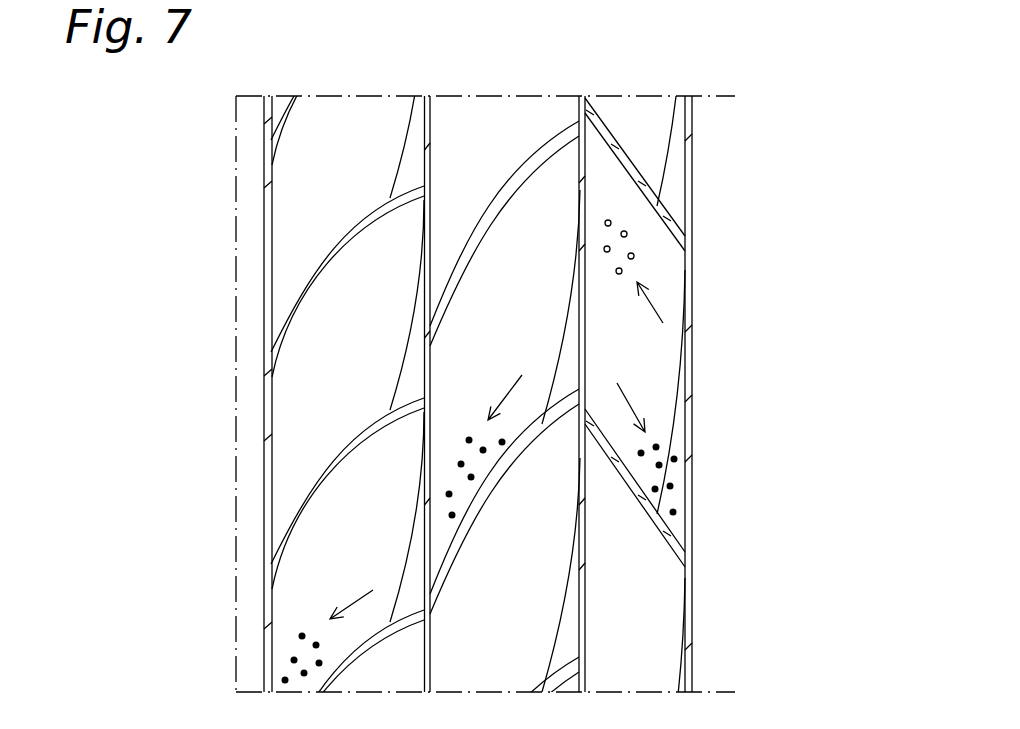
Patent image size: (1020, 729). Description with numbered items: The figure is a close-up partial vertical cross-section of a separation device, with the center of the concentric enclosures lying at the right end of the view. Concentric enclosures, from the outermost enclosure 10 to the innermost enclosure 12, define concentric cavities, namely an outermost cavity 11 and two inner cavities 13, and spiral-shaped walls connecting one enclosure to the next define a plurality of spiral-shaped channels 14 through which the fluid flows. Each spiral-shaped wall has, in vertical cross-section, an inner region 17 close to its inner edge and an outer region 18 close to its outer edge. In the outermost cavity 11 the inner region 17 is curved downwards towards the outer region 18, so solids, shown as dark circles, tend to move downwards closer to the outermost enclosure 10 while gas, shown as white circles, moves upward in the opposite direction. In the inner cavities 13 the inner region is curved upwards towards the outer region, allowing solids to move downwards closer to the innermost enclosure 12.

The outermost enclosure 10 is at (690, 352).
The outermost cavity 11 is at (646, 72).
The innermost enclosure 12 is at (268, 673).
The inner cavity 13 is at (372, 97).
The spiral-shaped channel 14 is at (678, 175).
The inner region 17 is at (443, 397).
The outer region 18 is at (573, 268).